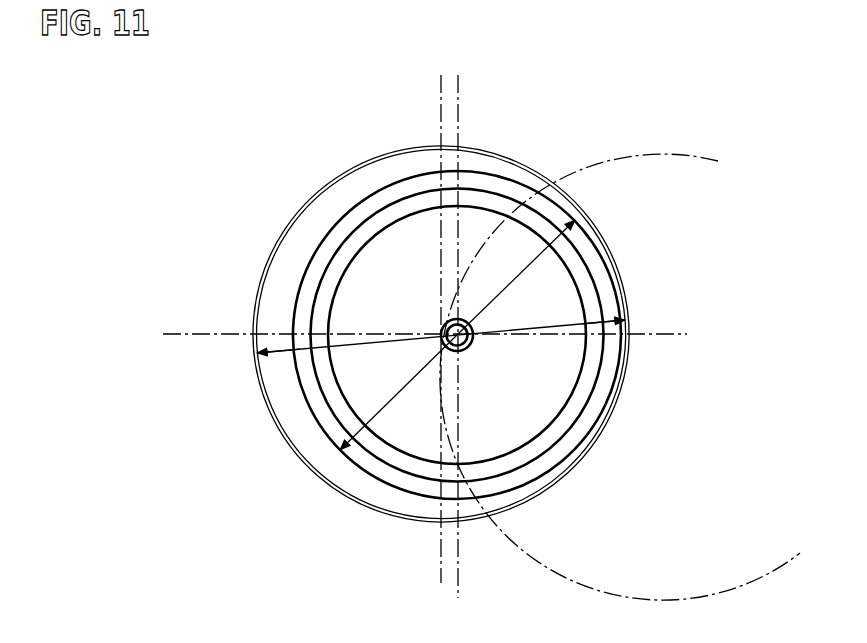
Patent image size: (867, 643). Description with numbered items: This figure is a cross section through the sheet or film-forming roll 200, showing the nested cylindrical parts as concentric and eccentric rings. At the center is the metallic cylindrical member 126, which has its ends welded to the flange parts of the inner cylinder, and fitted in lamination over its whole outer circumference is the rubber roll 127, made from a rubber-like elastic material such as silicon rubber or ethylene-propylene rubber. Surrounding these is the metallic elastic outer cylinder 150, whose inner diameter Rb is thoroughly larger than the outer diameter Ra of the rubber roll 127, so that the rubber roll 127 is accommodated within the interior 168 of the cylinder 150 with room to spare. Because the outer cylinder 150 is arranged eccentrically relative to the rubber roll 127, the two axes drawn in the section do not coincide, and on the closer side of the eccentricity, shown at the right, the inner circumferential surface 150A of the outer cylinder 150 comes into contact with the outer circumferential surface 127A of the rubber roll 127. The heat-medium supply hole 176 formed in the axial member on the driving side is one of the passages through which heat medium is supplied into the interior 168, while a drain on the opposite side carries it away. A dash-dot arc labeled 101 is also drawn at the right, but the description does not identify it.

The sheet or film-forming roll 200 is at (229, 190).
The metallic elastic outer cylinder 150 is at (523, 163).
The inner circumferential surface of the outer cylinder 150A is at (610, 400).
The rubber roll 127 is at (588, 238).
The outer circumferential surface of the rubber roll 127A is at (630, 347).
The metallic cylindrical member 126 is at (583, 295).
The heat-medium supply hole 176 is at (470, 350).
The interior of the outer cylinder 168 is at (293, 435).
The housing wall 101 is at (704, 505).
The outer diameter of the rubber roll Ra is at (385, 405).
The inner diameter of the outer cylinder Rb is at (545, 322).